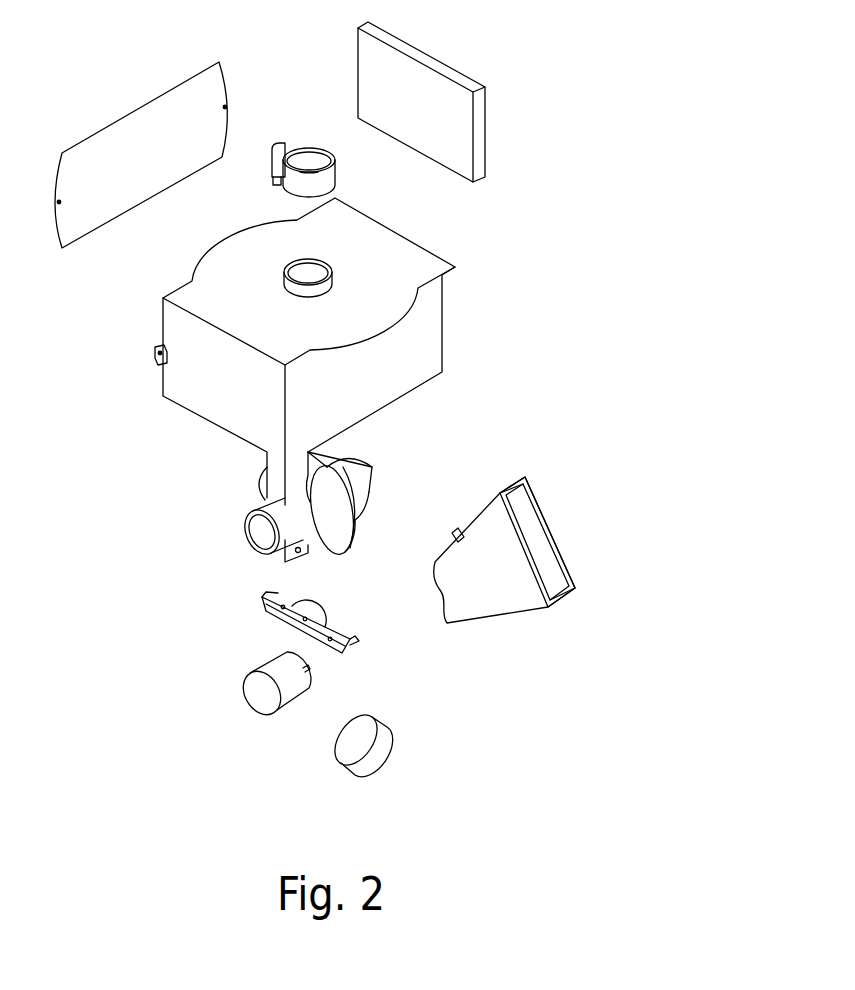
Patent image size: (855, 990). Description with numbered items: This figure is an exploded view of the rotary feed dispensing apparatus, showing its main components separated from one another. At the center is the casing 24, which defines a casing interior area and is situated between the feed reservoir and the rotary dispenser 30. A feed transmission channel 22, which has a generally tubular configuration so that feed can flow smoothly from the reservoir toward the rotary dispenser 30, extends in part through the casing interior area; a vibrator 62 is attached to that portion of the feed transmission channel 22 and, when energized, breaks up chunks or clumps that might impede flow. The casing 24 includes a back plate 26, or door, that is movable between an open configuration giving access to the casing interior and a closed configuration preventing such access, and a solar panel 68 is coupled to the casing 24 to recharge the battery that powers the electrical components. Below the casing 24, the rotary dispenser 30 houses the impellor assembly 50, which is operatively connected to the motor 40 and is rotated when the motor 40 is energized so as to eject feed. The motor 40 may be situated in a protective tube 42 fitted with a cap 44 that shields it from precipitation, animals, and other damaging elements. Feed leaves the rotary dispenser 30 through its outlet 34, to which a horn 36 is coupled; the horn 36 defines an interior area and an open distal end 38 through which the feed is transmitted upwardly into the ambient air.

The feed transmission channel 22 is at (333, 283).
The casing 24 is at (486, 317).
The back plate 26 is at (148, 118).
The rotary dispenser 30 is at (335, 483).
The outlet 34 is at (348, 523).
The horn 36 is at (492, 603).
The open distal end 38 is at (540, 513).
The motor 40 is at (260, 695).
The protective tube 42 is at (303, 528).
The cap 44 is at (247, 532).
The impellor assembly 50 is at (265, 629).
The vibrator 62 is at (307, 157).
The solar panel 68 is at (413, 80).